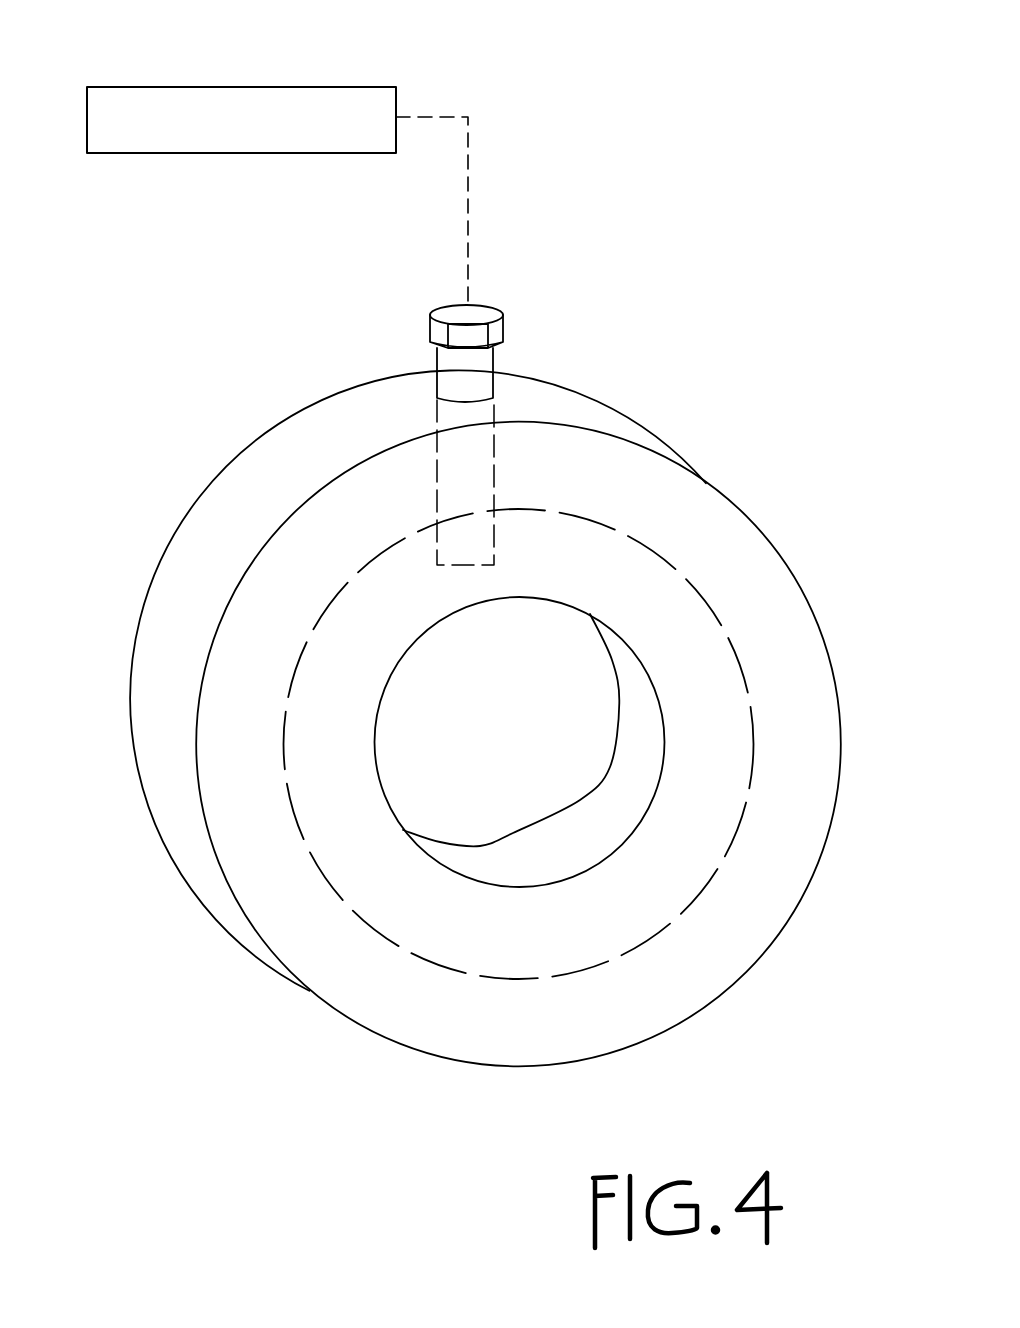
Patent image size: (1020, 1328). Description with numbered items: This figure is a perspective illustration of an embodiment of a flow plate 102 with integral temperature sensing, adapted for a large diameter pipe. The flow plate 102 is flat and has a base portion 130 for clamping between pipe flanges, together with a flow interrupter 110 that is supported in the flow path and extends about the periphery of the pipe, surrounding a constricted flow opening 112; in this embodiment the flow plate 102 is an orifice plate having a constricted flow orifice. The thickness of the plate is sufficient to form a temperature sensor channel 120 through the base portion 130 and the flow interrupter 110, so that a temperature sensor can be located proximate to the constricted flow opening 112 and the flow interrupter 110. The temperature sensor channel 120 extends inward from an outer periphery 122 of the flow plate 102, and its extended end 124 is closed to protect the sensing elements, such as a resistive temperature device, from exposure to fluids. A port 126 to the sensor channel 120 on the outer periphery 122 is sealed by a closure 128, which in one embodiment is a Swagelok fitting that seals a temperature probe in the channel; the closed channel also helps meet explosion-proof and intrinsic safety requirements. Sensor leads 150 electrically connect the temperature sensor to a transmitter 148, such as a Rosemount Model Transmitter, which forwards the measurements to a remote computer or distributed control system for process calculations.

The flow plate 102 is at (796, 569).
The flow interrupter 110 is at (498, 950).
The constricted flow opening 112 is at (493, 725).
The temperature sensor channel 120 is at (495, 450).
The outer periphery 122 is at (841, 748).
The extended end 124 is at (483, 566).
The port 126 is at (503, 396).
The closure 128 is at (428, 323).
The base portion 130 is at (773, 874).
The transmitter 148 is at (290, 84).
The sensor leads 150 is at (472, 157).